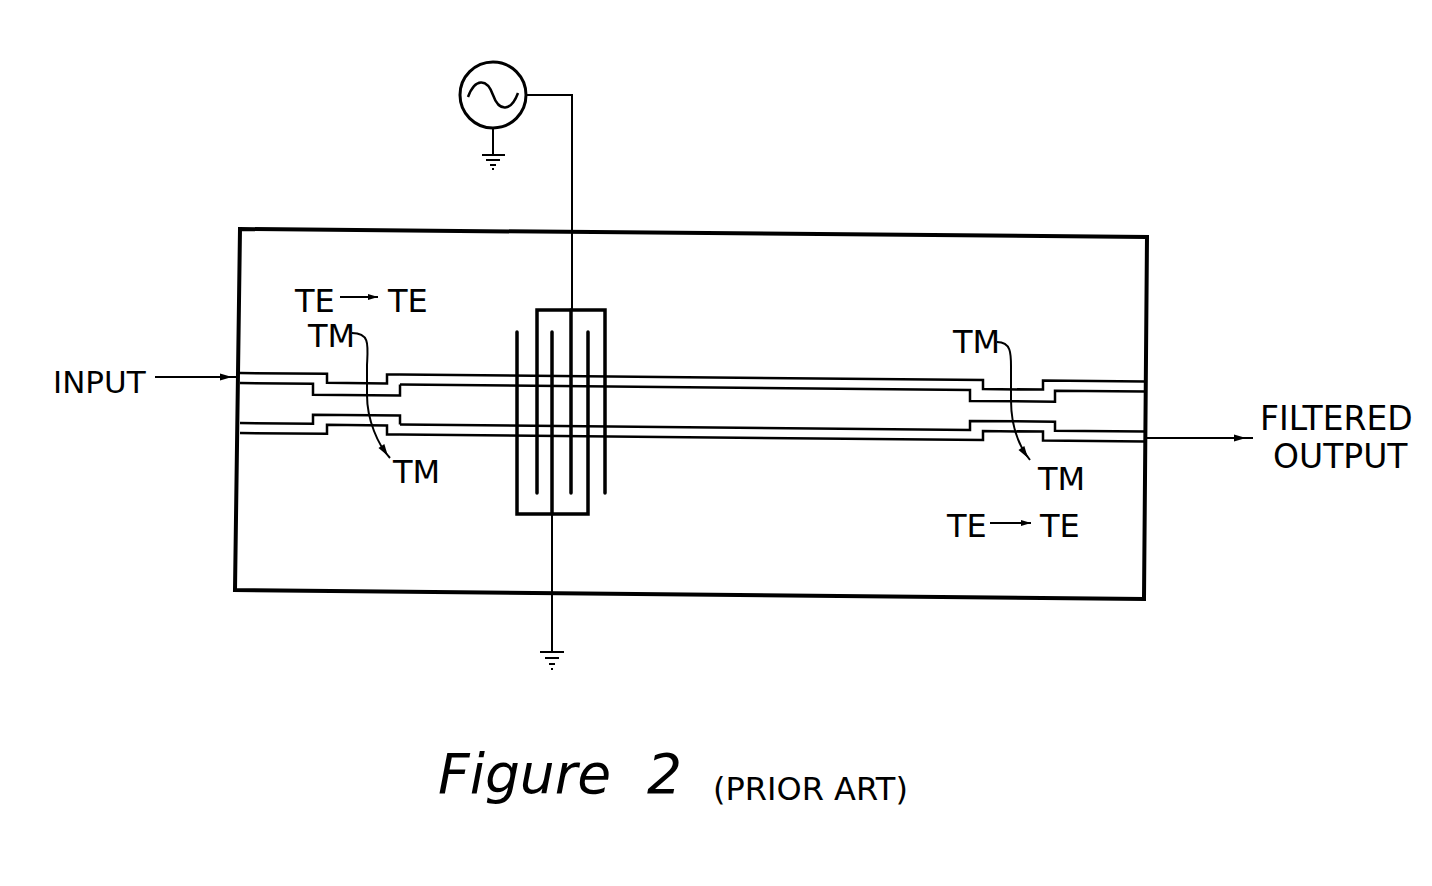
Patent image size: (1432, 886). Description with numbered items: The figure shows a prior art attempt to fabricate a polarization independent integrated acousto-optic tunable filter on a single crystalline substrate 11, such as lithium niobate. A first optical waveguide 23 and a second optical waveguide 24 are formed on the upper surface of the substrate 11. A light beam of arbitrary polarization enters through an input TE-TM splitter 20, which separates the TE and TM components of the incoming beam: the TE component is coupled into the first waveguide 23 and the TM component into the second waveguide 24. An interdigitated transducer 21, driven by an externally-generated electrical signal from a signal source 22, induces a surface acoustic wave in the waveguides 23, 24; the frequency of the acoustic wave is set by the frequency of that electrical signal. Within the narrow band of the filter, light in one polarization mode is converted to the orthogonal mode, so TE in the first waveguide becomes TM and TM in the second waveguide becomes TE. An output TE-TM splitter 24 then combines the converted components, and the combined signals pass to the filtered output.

The crystalline substrate 11 is at (783, 597).
The input TE-TM splitter 20 is at (276, 454).
The interdigitated transducer 21 is at (583, 322).
The signal source 22 is at (466, 77).
The first optical waveguide 23 is at (703, 375).
The second optical waveguide 24 is at (717, 440).